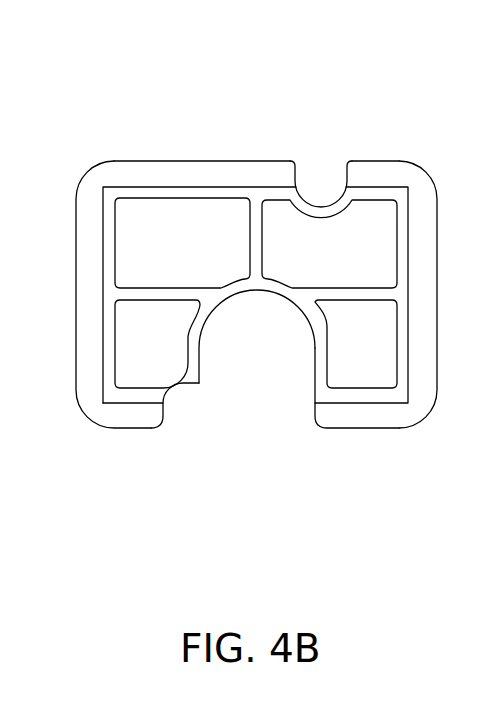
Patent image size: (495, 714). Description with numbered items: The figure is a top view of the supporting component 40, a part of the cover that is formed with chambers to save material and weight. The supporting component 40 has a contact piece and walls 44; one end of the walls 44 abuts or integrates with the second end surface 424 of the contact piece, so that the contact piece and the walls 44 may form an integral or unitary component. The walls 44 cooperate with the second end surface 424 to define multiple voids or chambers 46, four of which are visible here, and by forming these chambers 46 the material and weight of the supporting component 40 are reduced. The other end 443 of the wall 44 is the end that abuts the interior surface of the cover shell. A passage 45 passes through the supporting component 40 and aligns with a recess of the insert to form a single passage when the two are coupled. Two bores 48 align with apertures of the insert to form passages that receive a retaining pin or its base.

The supporting component 40 is at (147, 498).
The walls 44 is at (162, 187).
The second end surface 424 is at (212, 175).
The other end of the wall 443 is at (402, 237).
The passage 45 is at (265, 337).
The chambers 46 is at (193, 257).
The bores 48 is at (320, 182).